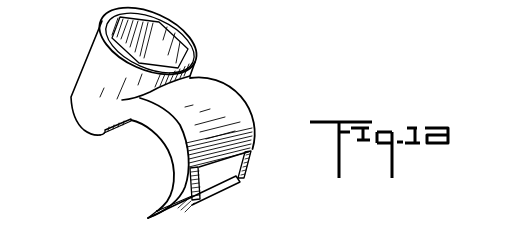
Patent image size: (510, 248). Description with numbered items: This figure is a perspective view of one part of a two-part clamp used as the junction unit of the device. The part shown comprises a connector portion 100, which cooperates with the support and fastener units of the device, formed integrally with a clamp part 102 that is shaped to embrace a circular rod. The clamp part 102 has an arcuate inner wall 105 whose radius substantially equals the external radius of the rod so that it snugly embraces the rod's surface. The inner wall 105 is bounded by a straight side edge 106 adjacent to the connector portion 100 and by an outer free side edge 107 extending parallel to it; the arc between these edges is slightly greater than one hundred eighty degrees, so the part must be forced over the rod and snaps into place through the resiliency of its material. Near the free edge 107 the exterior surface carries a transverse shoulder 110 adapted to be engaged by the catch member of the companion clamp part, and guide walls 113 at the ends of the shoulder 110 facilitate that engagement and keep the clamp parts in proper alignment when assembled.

The connector portion 100 is at (186, 36).
The clamp part 102 is at (232, 95).
The inner wall 105 is at (176, 157).
The straight side edge 106 is at (104, 134).
The outer free side edge 107 is at (155, 215).
The transverse shoulder 110 is at (224, 185).
The guide walls 113 is at (243, 162).